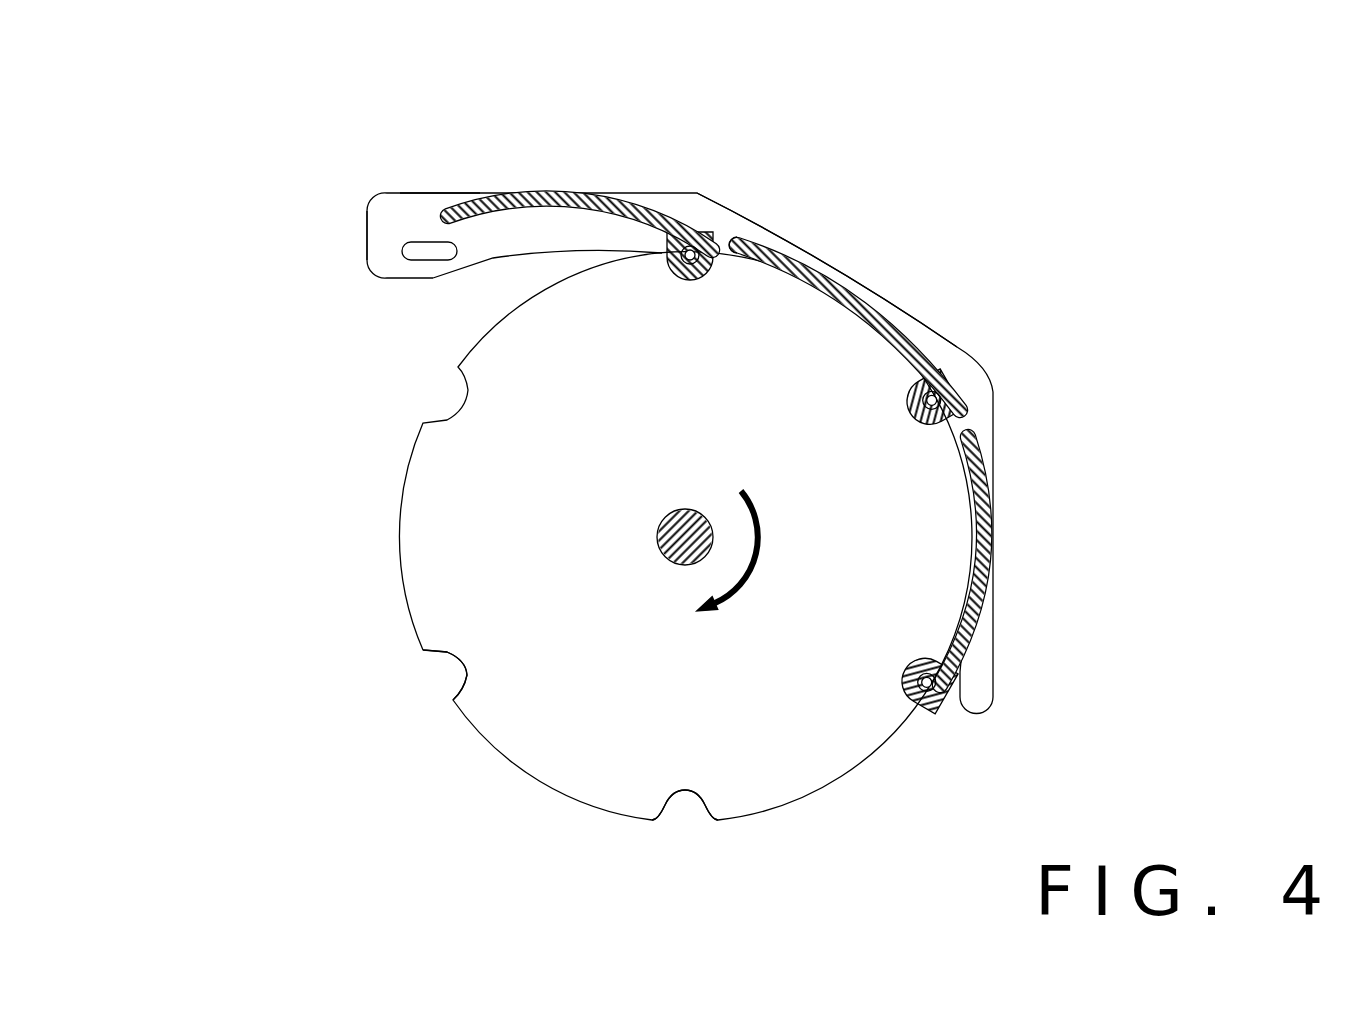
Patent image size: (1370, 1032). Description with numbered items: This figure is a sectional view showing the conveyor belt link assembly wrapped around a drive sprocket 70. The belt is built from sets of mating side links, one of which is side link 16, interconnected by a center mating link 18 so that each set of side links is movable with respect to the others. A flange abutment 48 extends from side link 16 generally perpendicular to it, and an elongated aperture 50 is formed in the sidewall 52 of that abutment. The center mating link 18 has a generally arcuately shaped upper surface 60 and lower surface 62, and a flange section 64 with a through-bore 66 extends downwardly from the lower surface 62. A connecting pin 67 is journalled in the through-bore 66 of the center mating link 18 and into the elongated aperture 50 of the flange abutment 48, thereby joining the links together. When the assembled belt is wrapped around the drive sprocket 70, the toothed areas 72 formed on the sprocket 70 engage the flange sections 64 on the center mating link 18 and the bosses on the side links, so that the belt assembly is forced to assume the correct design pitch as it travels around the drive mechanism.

The side link 16 is at (383, 193).
The center mating link 18 is at (700, 242).
The flange abutment 48 is at (438, 193).
The elongated aperture 50 is at (405, 265).
The sidewall 52 is at (377, 247).
The upper surface 60 is at (767, 233).
The lower surface 62 is at (570, 215).
The flange section 64 is at (708, 283).
The through-bore 66 is at (685, 262).
The connecting pin 67 is at (694, 250).
The drive sprocket 70 is at (630, 670).
The toothed areas 72 is at (450, 653).